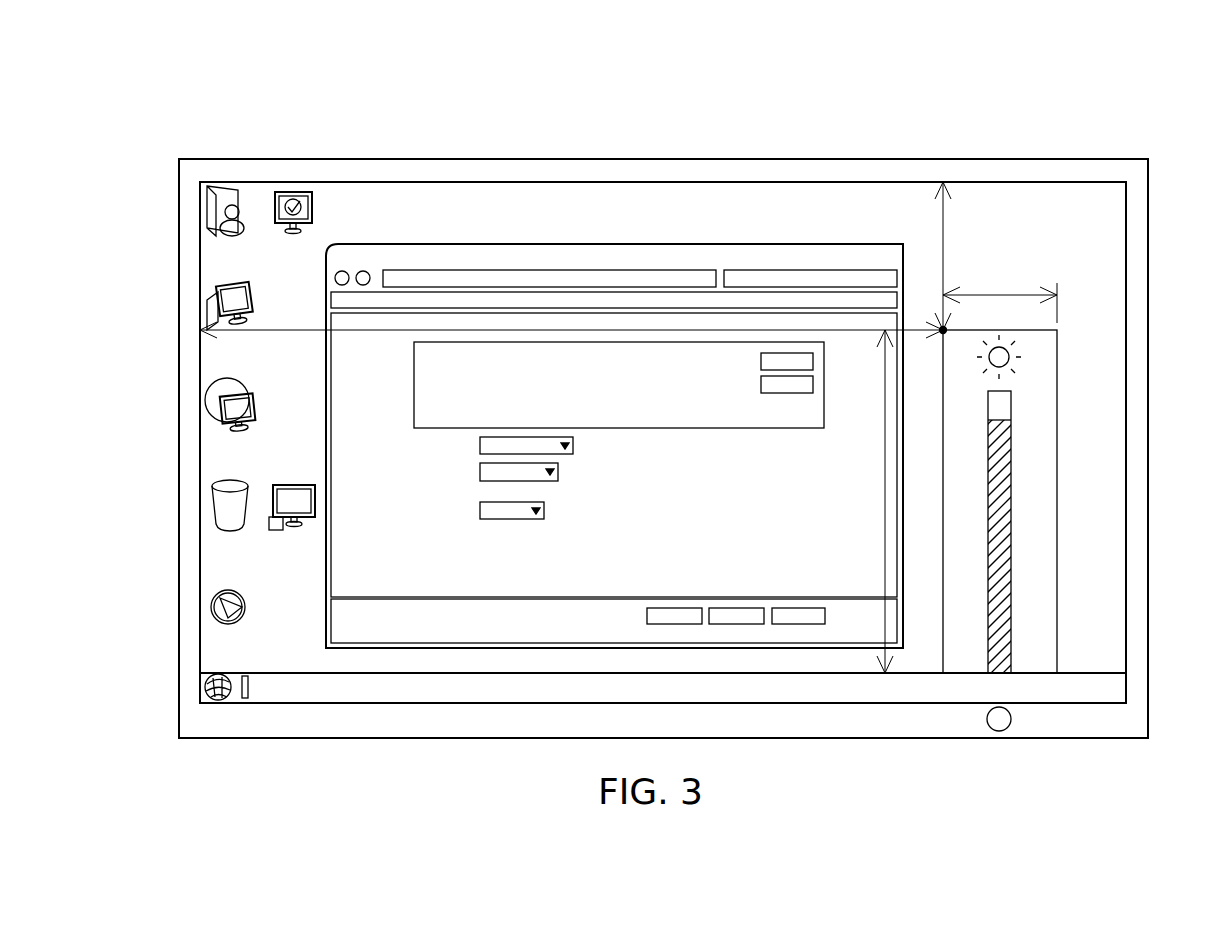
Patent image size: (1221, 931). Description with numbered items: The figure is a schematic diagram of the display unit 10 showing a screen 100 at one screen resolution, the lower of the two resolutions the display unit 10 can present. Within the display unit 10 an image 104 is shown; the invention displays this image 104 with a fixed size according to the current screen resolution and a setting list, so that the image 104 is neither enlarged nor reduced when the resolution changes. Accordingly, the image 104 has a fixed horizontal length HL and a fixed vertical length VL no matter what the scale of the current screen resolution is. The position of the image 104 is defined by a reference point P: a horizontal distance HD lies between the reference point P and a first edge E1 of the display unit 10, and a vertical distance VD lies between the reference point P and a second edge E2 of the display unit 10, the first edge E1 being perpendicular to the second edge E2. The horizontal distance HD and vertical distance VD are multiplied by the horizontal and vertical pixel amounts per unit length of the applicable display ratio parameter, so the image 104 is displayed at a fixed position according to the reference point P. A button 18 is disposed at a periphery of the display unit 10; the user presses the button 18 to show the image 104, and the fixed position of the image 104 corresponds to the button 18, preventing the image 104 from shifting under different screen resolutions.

The display unit 10 is at (1091, 126).
The screen 100 is at (568, 225).
The image 104 is at (1057, 500).
The button 18 is at (999, 731).
The first edge E1 is at (200, 366).
The second edge E2 is at (424, 182).
The reference point P is at (941, 327).
The horizontal distance HD is at (571, 318).
The vertical distance VD is at (925, 256).
The horizontal length HL is at (1000, 294).
The vertical length VL is at (867, 501).